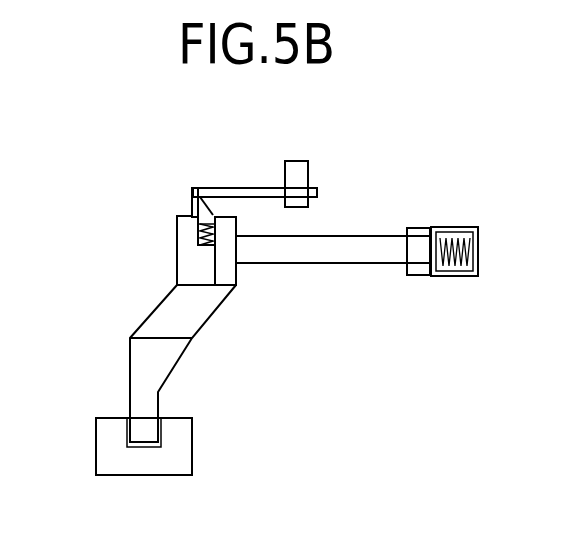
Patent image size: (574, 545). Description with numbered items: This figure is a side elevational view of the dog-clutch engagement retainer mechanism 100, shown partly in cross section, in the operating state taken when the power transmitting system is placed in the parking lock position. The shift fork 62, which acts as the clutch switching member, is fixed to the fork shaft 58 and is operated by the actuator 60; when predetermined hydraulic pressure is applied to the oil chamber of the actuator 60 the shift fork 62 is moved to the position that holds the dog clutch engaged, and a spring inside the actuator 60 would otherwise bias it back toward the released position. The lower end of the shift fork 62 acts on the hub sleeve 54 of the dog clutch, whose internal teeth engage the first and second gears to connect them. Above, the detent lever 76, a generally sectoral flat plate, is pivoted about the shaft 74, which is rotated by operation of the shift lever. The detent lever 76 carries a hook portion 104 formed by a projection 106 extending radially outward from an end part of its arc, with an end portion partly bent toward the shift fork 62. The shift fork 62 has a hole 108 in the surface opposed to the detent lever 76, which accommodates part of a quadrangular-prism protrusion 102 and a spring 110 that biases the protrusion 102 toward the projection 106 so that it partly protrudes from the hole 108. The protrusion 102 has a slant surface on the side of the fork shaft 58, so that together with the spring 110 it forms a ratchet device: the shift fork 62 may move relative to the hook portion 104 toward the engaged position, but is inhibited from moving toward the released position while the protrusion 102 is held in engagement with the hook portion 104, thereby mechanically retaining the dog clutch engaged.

The hub sleeve 54 is at (162, 466).
The fork shaft 58 is at (385, 236).
The actuator 60 is at (450, 205).
The shift fork 62 is at (152, 326).
The shaft 74 is at (297, 168).
The detent lever 76 is at (240, 192).
The dog-clutch engagement retainer mechanism 100 is at (184, 206).
The protrusion 102 is at (212, 211).
The hook portion 104 is at (193, 197).
The projection 106 is at (196, 188).
The hole 108 is at (200, 228).
The spring 110 is at (213, 246).